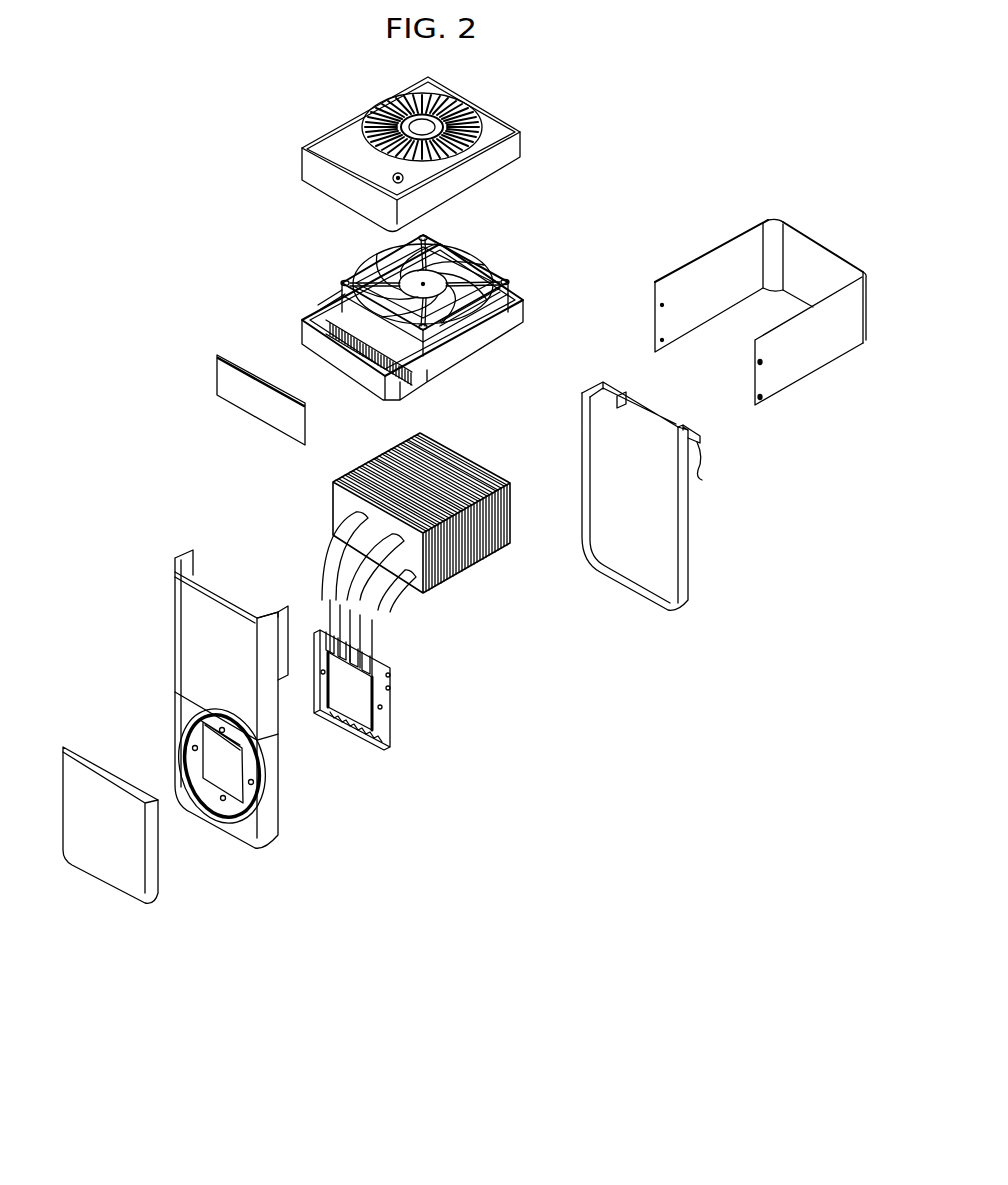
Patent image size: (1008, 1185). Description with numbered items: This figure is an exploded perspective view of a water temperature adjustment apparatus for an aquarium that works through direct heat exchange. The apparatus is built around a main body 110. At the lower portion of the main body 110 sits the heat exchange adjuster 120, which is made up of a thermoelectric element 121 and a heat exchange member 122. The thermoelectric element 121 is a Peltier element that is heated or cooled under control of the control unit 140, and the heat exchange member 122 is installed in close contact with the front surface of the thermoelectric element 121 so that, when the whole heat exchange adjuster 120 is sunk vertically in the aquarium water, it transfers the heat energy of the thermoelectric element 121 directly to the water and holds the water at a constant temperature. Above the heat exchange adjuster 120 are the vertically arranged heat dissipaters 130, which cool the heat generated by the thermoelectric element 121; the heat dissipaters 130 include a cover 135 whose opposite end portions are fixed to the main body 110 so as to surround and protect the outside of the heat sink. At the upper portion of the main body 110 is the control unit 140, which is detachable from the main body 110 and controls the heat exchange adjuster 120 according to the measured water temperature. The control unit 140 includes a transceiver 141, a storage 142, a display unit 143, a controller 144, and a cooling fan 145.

The main body 110 is at (690, 527).
The heat exchange adjuster 120 is at (373, 965).
The thermoelectric element 121 is at (350, 700).
The heat exchange member 122 is at (160, 887).
The heat dissipaters 130 is at (473, 567).
The cover 135 is at (738, 228).
The control unit 140 is at (233, 242).
The transceiver 141 is at (288, 261).
The storage 142 is at (199, 374).
The display unit 143 is at (302, 322).
The controller 144 is at (220, 372).
The cooling fan 145 is at (342, 283).